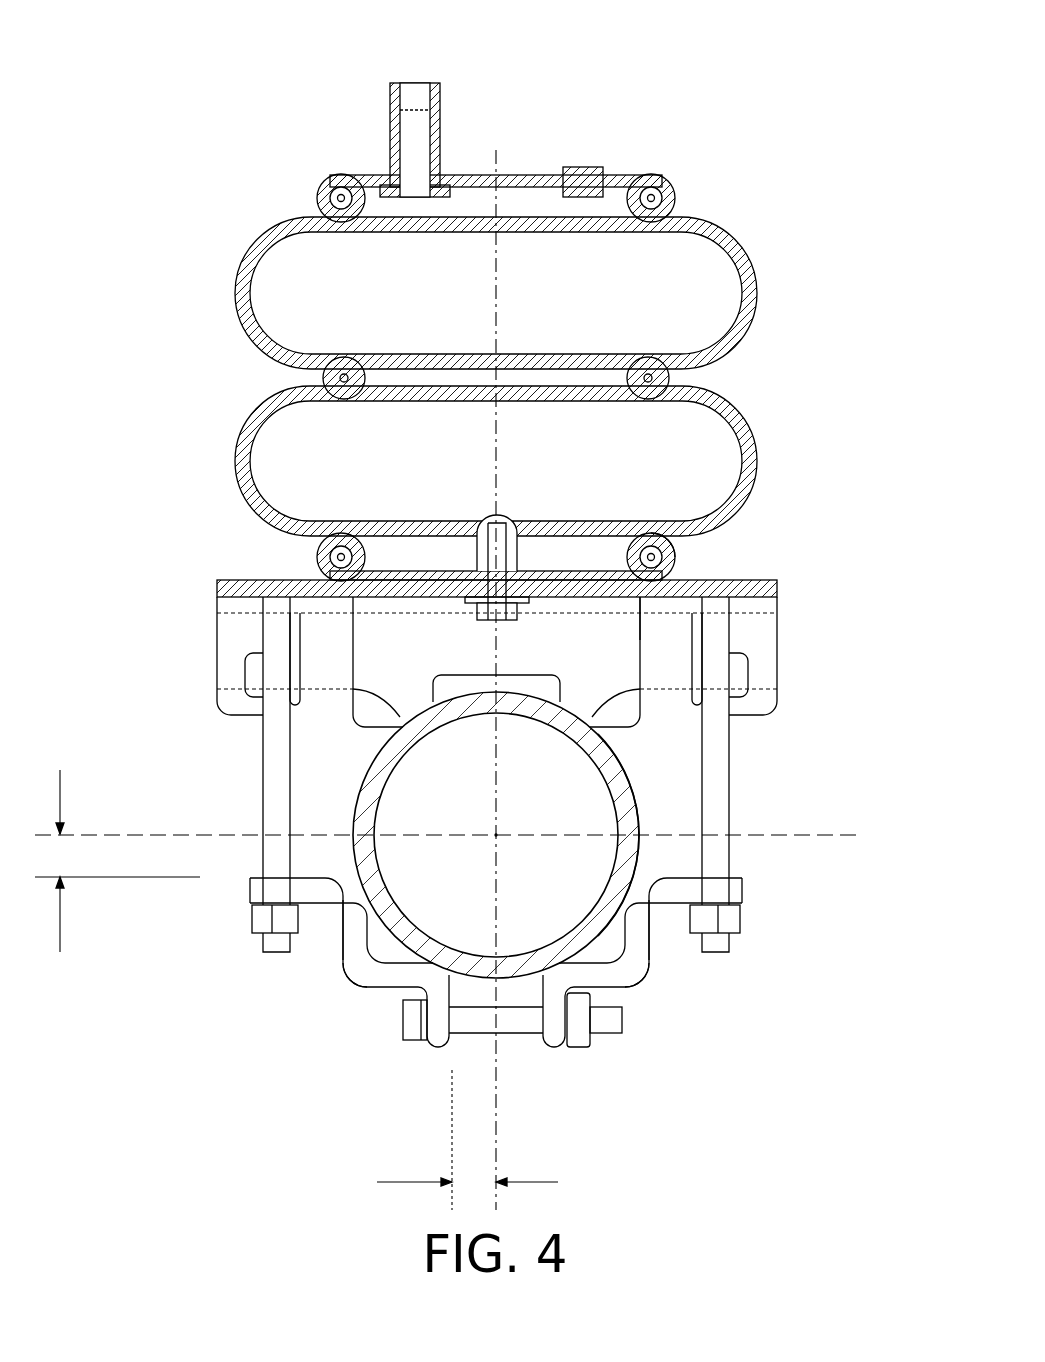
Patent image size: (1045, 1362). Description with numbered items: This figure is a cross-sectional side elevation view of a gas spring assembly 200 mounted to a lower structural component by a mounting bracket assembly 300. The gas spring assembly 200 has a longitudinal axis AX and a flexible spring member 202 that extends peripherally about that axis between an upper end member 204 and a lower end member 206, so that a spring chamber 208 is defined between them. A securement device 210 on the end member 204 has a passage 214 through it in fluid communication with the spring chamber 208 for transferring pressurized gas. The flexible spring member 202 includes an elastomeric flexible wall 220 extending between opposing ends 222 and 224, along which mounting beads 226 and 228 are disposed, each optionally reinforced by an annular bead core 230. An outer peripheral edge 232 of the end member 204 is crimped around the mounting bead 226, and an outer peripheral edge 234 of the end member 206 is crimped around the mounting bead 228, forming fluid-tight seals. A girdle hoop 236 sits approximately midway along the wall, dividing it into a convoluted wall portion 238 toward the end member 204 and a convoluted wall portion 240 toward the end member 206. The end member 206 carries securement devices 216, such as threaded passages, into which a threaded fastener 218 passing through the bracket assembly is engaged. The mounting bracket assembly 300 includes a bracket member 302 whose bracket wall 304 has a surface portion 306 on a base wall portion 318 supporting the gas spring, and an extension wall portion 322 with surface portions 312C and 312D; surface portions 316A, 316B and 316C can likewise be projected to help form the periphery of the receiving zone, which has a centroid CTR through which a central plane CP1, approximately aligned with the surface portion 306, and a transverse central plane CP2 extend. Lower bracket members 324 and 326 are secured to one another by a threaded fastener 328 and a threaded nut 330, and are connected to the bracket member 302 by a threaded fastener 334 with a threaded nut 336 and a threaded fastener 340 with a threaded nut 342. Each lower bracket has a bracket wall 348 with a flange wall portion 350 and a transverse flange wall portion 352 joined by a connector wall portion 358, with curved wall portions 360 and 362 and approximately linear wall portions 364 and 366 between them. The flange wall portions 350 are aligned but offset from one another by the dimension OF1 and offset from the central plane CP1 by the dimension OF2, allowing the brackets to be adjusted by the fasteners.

The gas spring assembly 200 is at (501, 586).
The flexible spring member 202 is at (508, 527).
The end member 204 is at (548, 172).
The end member 206 is at (568, 571).
The spring chamber 208 is at (712, 273).
The securement device 210 is at (346, 105).
The passage 214 is at (415, 93).
The securement device 216 is at (498, 519).
The threaded fastener 218 is at (467, 540).
The flexible wall 220 is at (735, 400).
The end 222 is at (768, 197).
The end 224 is at (768, 520).
The mounting bead 226 is at (672, 185).
The mounting bead 228 is at (680, 545).
The bead core 230 is at (655, 195).
The outer peripheral edge 232 is at (327, 198).
The outer peripheral edge 234 is at (322, 550).
The girdle hoop 236 is at (660, 367).
The convoluted wall portion 238 is at (245, 318).
The convoluted wall portion 240 is at (237, 435).
The mounting bracket assembly 300 is at (501, 792).
The bracket member 302 is at (190, 580).
The bracket wall 304 is at (245, 578).
The surface portion 306 is at (777, 590).
The surface portion 312C is at (748, 689).
The surface portion 312D is at (245, 692).
The surface portion 316A is at (420, 615).
The surface portion 316B is at (585, 690).
The surface portion 316C is at (425, 690).
The base wall portion 318 is at (370, 598).
The extension wall portion 322 is at (640, 658).
The bracket member 324 is at (340, 1000).
The bracket member 326 is at (655, 965).
The threaded fastener 328 is at (529, 1076).
The threaded nut 330 is at (585, 1046).
The threaded fastener 334 is at (265, 750).
The threaded nut 336 is at (250, 920).
The threaded fastener 340 is at (722, 738).
The threaded nut 342 is at (740, 920).
The bracket wall 348 is at (425, 1012).
The flange wall portion 350 is at (440, 1045).
The flange wall portion 352 is at (270, 878).
The connector wall portion 358 is at (360, 985).
The wall portion 360 is at (445, 975).
The wall portion 362 is at (405, 870).
The wall portion 364 is at (400, 935).
The wall portion 366 is at (338, 962).
The longitudinal axis AX is at (500, 160).
The centroid CTR is at (497, 832).
The central plane CP1 is at (160, 834).
The central plane CP2 is at (497, 1098).
The reference dimension OF1 is at (398, 1182).
The reference dimension OF2 is at (62, 940).